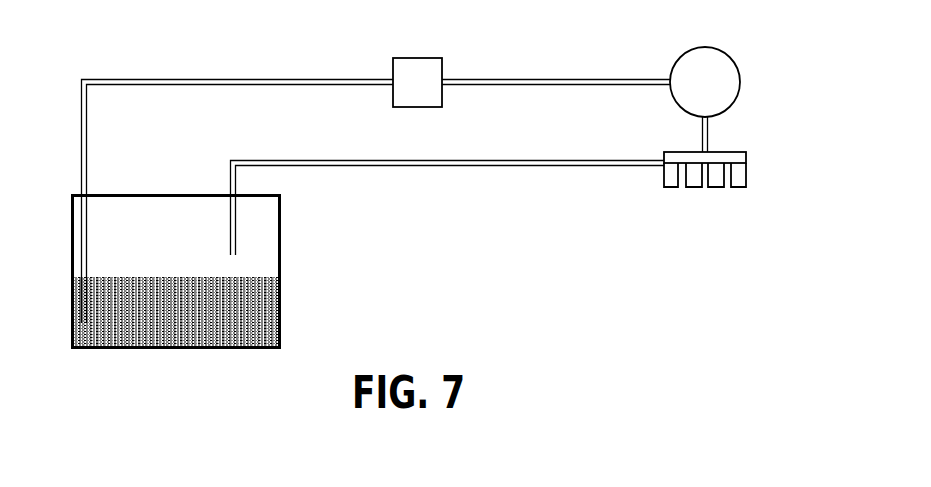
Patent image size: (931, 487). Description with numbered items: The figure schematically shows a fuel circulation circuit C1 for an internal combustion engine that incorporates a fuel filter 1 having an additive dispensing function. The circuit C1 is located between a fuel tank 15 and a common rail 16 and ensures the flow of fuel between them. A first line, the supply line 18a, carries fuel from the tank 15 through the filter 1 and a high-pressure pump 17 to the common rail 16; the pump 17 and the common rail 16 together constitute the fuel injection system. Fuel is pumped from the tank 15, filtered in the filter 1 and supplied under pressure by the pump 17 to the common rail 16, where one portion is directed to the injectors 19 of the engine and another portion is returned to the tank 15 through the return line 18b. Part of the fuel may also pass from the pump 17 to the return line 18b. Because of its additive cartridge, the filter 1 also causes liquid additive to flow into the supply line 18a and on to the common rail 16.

The fuel filter 1 is at (407, 58).
The fuel tank 15 is at (273, 320).
The common rail 16 is at (746, 163).
The high-pressure pump 17 is at (710, 67).
The supply line 18a is at (138, 79).
The return line 18b is at (393, 166).
The injectors 19 is at (670, 188).
The fuel circulation circuit C1 is at (532, 237).